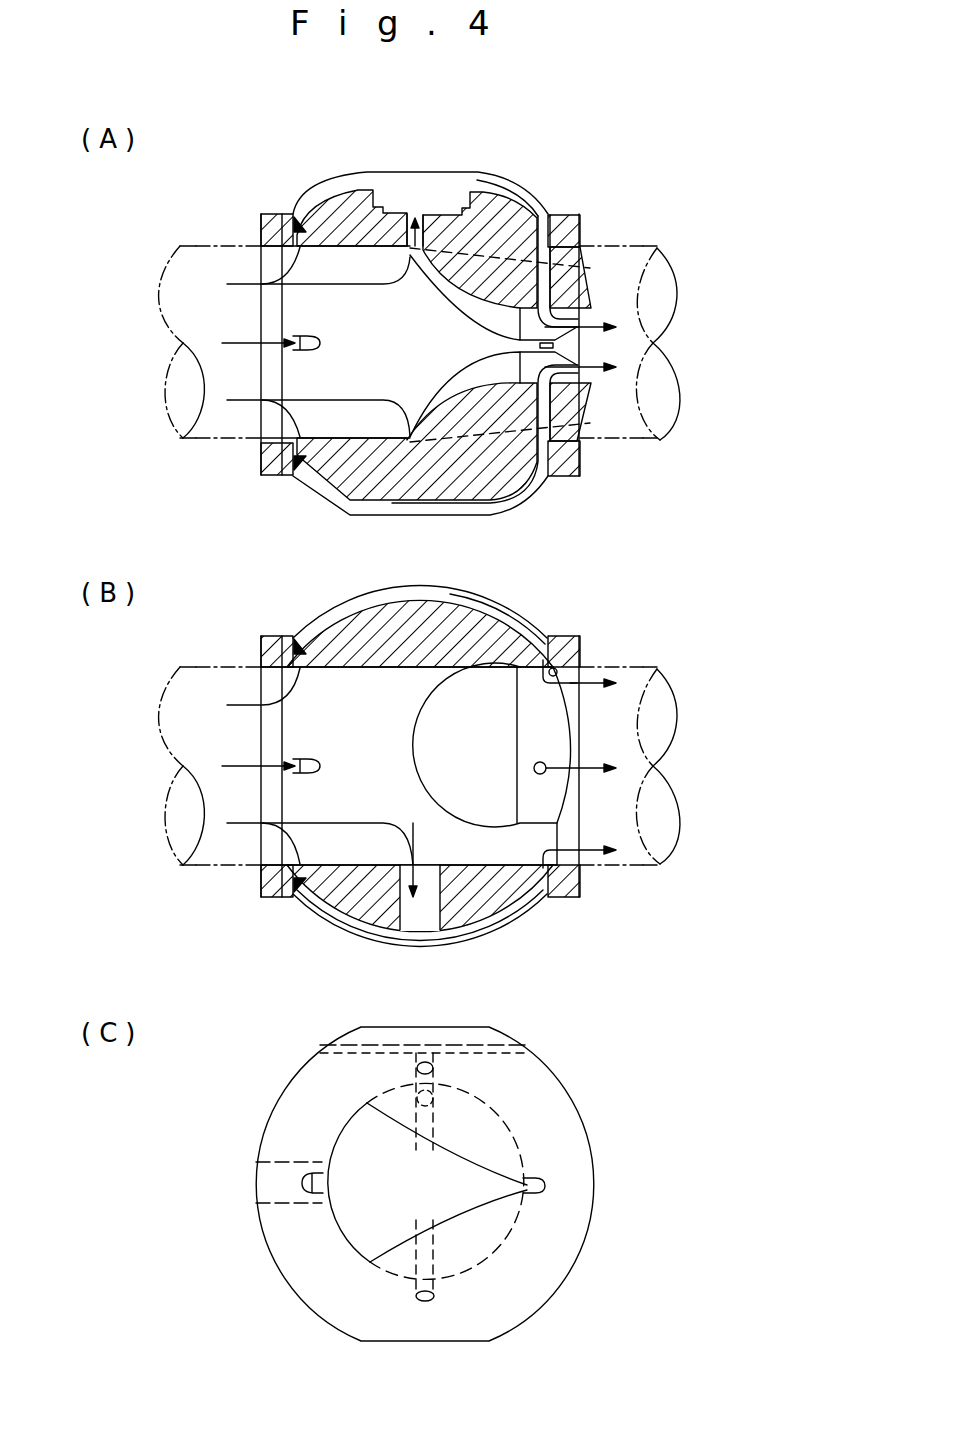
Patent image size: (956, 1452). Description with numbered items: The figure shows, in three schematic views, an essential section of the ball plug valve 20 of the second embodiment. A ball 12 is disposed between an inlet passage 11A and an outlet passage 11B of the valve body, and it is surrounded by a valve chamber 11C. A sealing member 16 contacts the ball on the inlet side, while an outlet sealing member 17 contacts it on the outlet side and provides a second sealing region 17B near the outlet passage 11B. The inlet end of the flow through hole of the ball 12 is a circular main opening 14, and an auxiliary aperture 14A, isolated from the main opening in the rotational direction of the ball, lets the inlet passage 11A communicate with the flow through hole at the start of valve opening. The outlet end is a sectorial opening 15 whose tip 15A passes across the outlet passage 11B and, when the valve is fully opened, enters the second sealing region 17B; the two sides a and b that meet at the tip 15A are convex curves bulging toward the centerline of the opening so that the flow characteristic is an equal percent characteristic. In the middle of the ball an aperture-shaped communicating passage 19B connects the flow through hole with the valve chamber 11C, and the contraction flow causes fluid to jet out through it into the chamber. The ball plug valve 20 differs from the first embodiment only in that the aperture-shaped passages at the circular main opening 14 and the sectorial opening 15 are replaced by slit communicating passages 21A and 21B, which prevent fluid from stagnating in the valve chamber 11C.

The ball plug valve 20 is at (372, 151).
The inlet passage 11A is at (207, 243).
The outlet passage 11B is at (628, 242).
The valve chamber 11C is at (458, 172).
The ball 12 is at (459, 501).
The circular main opening 14 is at (281, 314).
The auxiliary aperture 14A is at (411, 925).
The sectorial opening 15 is at (587, 318).
The tip 15A is at (531, 1177).
The sealing member 16 is at (283, 212).
The outlet sealing member 17 is at (568, 213).
The second sealing region 17B is at (578, 661).
The communicating passage 19B is at (416, 214).
The slit communicating passage 21A is at (314, 352).
The slit communicating passage 21B is at (525, 684).
The side a is at (374, 1121).
The side b is at (385, 1246).